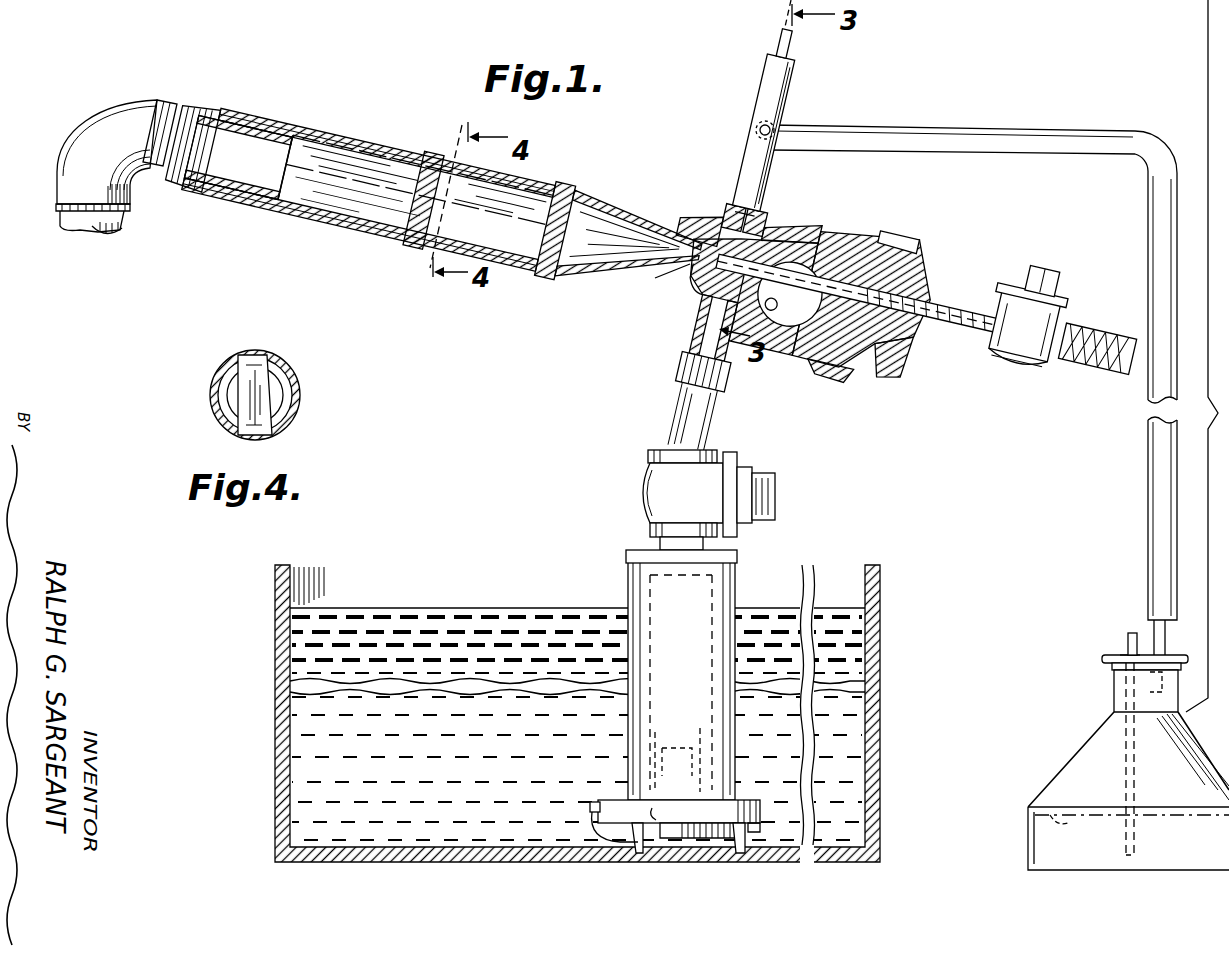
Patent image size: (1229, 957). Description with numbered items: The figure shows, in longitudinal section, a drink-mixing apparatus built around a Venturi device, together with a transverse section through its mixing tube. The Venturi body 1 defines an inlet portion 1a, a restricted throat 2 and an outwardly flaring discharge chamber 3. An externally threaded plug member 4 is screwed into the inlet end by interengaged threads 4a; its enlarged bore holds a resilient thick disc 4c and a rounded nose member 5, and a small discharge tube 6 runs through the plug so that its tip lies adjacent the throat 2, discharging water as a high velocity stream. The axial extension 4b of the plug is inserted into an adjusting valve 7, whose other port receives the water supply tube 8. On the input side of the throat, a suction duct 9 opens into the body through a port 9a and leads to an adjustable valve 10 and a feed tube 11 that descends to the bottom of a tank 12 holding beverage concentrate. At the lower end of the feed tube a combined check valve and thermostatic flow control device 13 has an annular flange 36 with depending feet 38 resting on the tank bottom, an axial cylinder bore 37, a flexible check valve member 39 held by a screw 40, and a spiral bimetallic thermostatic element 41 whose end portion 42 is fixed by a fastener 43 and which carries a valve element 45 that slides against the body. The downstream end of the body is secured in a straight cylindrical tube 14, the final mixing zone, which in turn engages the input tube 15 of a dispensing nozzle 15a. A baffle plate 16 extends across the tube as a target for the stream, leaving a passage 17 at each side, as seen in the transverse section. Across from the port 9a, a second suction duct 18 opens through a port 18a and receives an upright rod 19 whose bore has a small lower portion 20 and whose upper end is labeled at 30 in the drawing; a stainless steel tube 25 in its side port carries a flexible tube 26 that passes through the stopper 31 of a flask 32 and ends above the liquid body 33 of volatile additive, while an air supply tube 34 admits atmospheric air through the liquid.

In FIG. 1, the body 1 is at (801, 218).
In FIG. 1, the inlet portion 1a is at (662, 281).
In FIG. 1, the restricted throat 2 is at (696, 230).
In FIG. 1, the discharge chamber 3 is at (632, 218).
In FIG. 1, the plug member 4 is at (936, 242).
In FIG. 1, the interengaged threads 4a is at (850, 368).
In FIG. 1, the axial extension 4b is at (932, 350).
In FIG. 1, the thick disc 4c is at (896, 242).
In FIG. 1, the rounded nose member 5 is at (818, 228).
In FIG. 1, the discharge tube 6 is at (772, 306).
In FIG. 1, the adjusting valve 7 is at (1000, 300).
In FIG. 1, the water supply tube 8 is at (1092, 372).
In FIG. 1, the suction duct 9 is at (700, 352).
In FIG. 1, the port 9a is at (702, 298).
In FIG. 1, the adjustable valve 10 is at (650, 464).
In FIG. 1, the feed tube 11 is at (628, 604).
In FIG. 1, the tank 12 is at (283, 702).
In FIG. 1, the combined check valve and thermostatic flow control device 13 is at (600, 800).
In FIG. 1, the straight cylindrical tube 14 is at (412, 155).
In FIG. 4, the straight cylindrical tube 14 is at (286, 362).
In FIG. 1, the input tube 15 is at (186, 104).
In FIG. 1, the dispensing nozzle 15a is at (60, 214).
In FIG. 1, the baffle plate 16 is at (418, 236).
In FIG. 4, the baffle plate 16 is at (249, 360).
In FIG. 4, the passage 17 is at (222, 386).
In FIG. 1, the suction duct 18 is at (770, 218).
In FIG. 1, the port 18a is at (726, 230).
In FIG. 1, the upright rod 19 is at (792, 74).
In FIG. 1, the lower bore portion 20 is at (766, 210).
In FIG. 1, the stainless steel tube 25 is at (755, 128).
In FIG. 1, the flexible tube 26 is at (826, 134).
In FIG. 1, the cap 30 is at (782, 32).
In FIG. 1, the stopper 31 is at (1122, 656).
In FIG. 1, the flask 32 is at (1098, 722).
In FIG. 1, the liquid body of additive 33 is at (1036, 820).
In FIG. 1, the air supply tube 34 is at (1129, 636).
In FIG. 1, the annular flange 36 is at (750, 790).
In FIG. 1, the cylinder bore 37 is at (677, 751).
In FIG. 1, the depending feet 38 is at (636, 772).
In FIG. 1, the check valve member 39 is at (696, 748).
In FIG. 1, the screw 40 is at (658, 749).
In FIG. 1, the bimetallic thermostatic element 41 is at (752, 832).
In FIG. 1, the end portion 42 is at (596, 832).
In FIG. 1, the fastener 43 is at (590, 810).
In FIG. 1, the valve element 45 is at (667, 813).